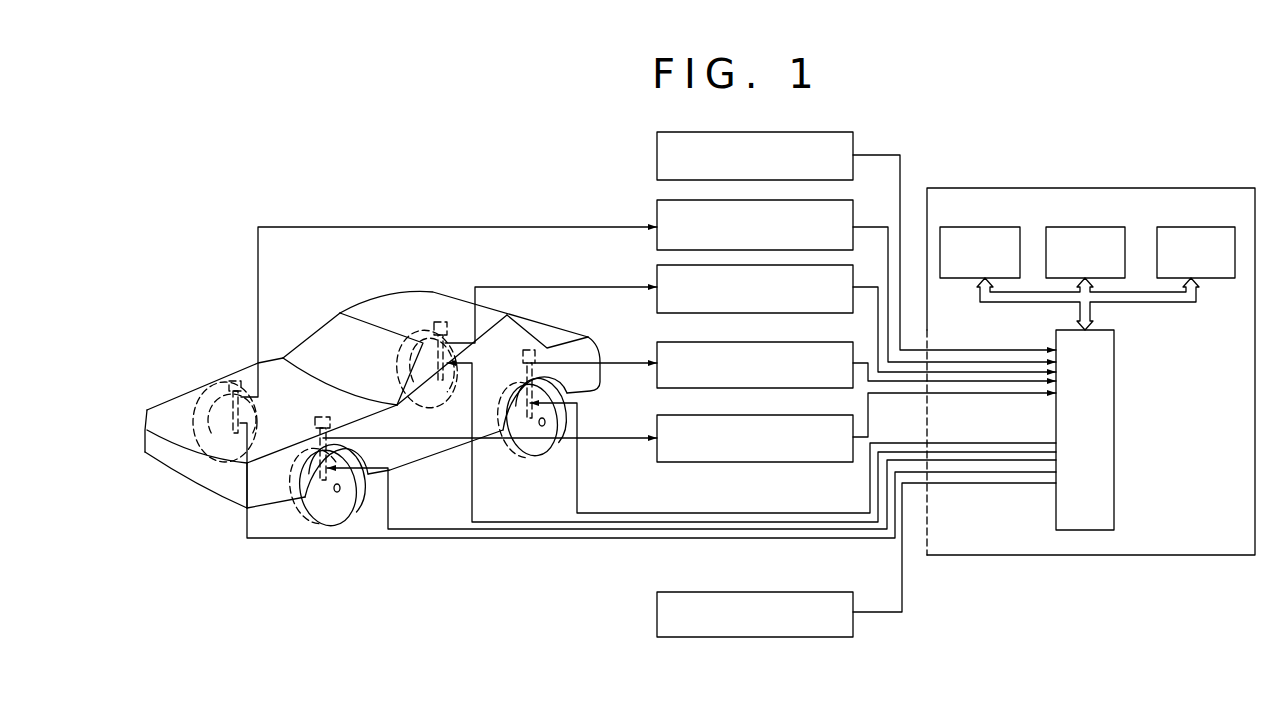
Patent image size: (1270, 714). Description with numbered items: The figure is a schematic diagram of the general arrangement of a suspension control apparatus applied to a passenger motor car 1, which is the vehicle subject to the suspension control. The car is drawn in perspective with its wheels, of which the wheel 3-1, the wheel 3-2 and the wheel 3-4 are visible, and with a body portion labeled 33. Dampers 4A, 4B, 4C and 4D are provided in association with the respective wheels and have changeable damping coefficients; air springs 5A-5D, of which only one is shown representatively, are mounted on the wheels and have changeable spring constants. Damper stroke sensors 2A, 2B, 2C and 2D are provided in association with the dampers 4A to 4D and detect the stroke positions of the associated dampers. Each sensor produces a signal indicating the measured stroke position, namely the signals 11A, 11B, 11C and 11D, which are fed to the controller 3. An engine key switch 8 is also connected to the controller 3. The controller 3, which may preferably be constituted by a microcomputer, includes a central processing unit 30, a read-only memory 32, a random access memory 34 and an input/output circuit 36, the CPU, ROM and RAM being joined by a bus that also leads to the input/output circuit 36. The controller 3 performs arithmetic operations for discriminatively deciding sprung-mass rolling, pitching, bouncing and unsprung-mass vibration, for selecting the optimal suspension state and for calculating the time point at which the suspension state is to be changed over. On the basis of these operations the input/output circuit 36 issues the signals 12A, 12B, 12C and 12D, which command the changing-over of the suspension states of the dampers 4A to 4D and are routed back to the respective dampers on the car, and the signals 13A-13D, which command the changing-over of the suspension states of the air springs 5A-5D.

The motor car 1 is at (368, 300).
The vehicle body pillar 33 is at (509, 316).
The wheel 3-1 is at (327, 513).
The wheel 3-2 is at (532, 450).
The wheel 3-4 is at (208, 406).
The damper 4A is at (375, 447).
The damper 4B is at (537, 357).
The damper 4C is at (443, 320).
The damper 4D is at (230, 381).
The damper stroke sensor 2A is at (657, 378).
The damper stroke sensor 2B is at (657, 330).
The damper stroke sensor 2C is at (657, 270).
The damper stroke sensor 2D is at (657, 207).
The engine key switch 8 is at (846, 132).
The signal 11A is at (868, 414).
The signal 11B is at (867, 350).
The signal 11C is at (868, 287).
The signal 11D is at (874, 227).
The signal 12A is at (742, 530).
The signal 12B is at (681, 513).
The signal 12C is at (761, 522).
The signal 12D is at (828, 538).
The signals 13A-13D is at (887, 613).
The air springs 5A-5D is at (797, 637).
The controller 3 is at (1162, 188).
The central processing unit 30 is at (981, 207).
The read-only memory 32 is at (1083, 207).
The random access memory 34 is at (1193, 207).
The input/output circuit 36 is at (1116, 408).